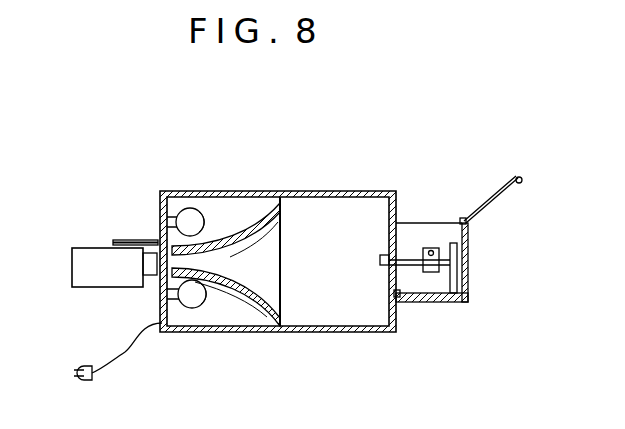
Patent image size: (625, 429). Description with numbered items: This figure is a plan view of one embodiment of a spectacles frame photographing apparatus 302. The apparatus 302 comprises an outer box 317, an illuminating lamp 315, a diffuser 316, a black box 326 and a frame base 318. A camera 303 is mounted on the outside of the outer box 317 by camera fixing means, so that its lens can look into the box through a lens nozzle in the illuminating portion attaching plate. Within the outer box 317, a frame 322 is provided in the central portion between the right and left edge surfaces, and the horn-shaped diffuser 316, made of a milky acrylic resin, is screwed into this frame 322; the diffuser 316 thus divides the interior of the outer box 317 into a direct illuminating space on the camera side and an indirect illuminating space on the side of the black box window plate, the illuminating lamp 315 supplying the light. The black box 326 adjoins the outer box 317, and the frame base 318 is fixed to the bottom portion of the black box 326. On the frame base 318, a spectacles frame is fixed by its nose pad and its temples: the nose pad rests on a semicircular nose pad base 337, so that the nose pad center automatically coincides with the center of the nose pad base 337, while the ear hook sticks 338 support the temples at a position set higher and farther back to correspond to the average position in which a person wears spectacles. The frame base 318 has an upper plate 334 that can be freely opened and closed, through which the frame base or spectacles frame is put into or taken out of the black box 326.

The spectacles frame photographing apparatus 302 is at (297, 188).
The camera 303 is at (82, 253).
The illuminating lamp 315 is at (191, 300).
The diffuser 316 is at (222, 242).
The outer box 317 is at (328, 333).
The frame base 318 is at (453, 287).
The frame 322 is at (282, 285).
The black box 326 is at (422, 235).
The upper plate 334 is at (522, 176).
The nose pad base 337 is at (384, 256).
The ear hook sticks 338 is at (434, 253).